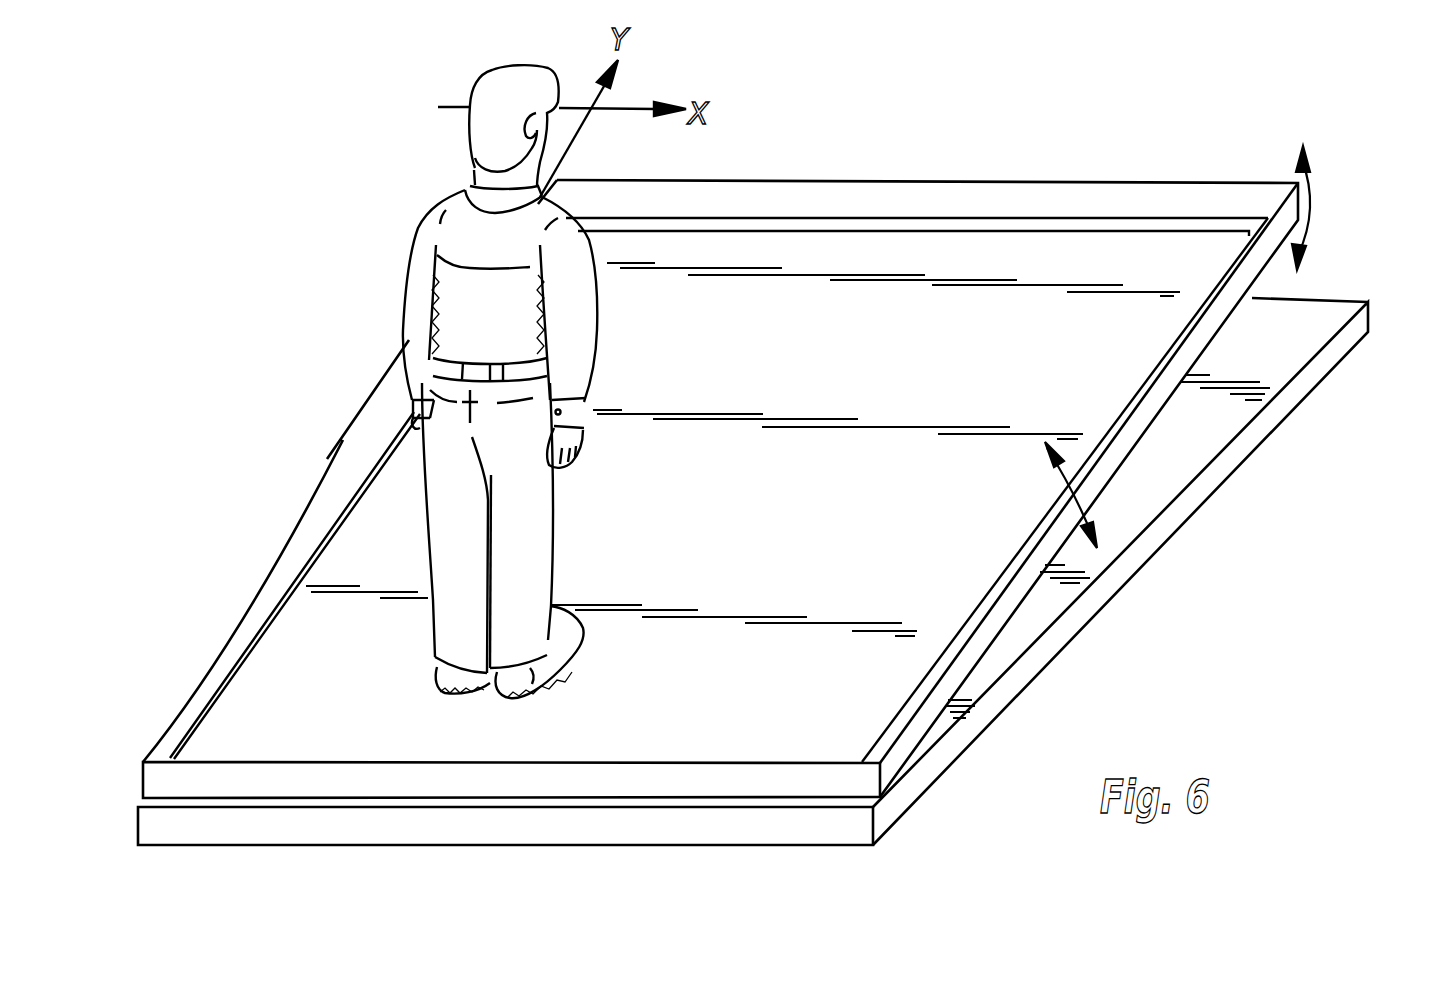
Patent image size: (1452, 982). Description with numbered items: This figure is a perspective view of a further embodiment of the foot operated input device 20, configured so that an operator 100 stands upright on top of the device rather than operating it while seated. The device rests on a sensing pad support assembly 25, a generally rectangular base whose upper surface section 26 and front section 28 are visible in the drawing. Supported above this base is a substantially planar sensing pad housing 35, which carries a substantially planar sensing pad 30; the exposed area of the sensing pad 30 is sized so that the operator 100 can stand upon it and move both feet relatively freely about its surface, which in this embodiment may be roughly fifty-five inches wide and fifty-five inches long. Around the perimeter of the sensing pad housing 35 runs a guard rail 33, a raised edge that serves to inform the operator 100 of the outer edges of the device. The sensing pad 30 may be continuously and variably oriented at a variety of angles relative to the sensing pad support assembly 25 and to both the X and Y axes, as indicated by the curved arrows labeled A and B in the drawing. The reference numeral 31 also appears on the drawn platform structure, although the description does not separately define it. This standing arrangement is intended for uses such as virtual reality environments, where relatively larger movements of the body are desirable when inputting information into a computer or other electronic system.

The foot operated input device 20 is at (795, 467).
The sensing pad support assembly 25 is at (795, 540).
The upper surface section 26 is at (1258, 372).
The front section 28 is at (812, 832).
The sensing pad 30 is at (1016, 258).
The platform 31 is at (720, 463).
The guard rail 33 is at (718, 188).
The sensing pad housing 35 is at (716, 505).
The operator 100 is at (443, 203).